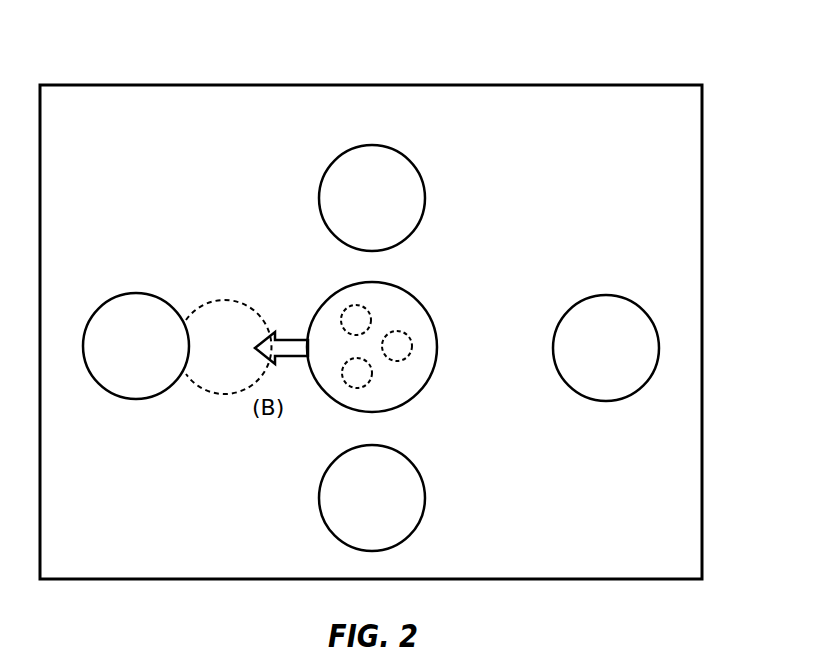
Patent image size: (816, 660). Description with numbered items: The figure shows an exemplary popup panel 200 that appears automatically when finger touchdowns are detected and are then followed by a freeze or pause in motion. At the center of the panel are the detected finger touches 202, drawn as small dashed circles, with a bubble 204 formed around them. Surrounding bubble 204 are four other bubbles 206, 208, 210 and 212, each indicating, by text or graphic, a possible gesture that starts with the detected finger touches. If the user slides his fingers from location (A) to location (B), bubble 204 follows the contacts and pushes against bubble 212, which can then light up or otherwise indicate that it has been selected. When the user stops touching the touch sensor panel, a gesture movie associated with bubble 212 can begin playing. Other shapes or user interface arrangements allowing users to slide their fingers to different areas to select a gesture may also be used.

The popup panel 200 is at (573, 85).
The detected finger touches 202 is at (345, 360).
The bubble 204 is at (423, 303).
The bubble 206 is at (370, 145).
The bubble 208 is at (606, 295).
The bubble 210 is at (410, 457).
The bubble 212 is at (137, 293).